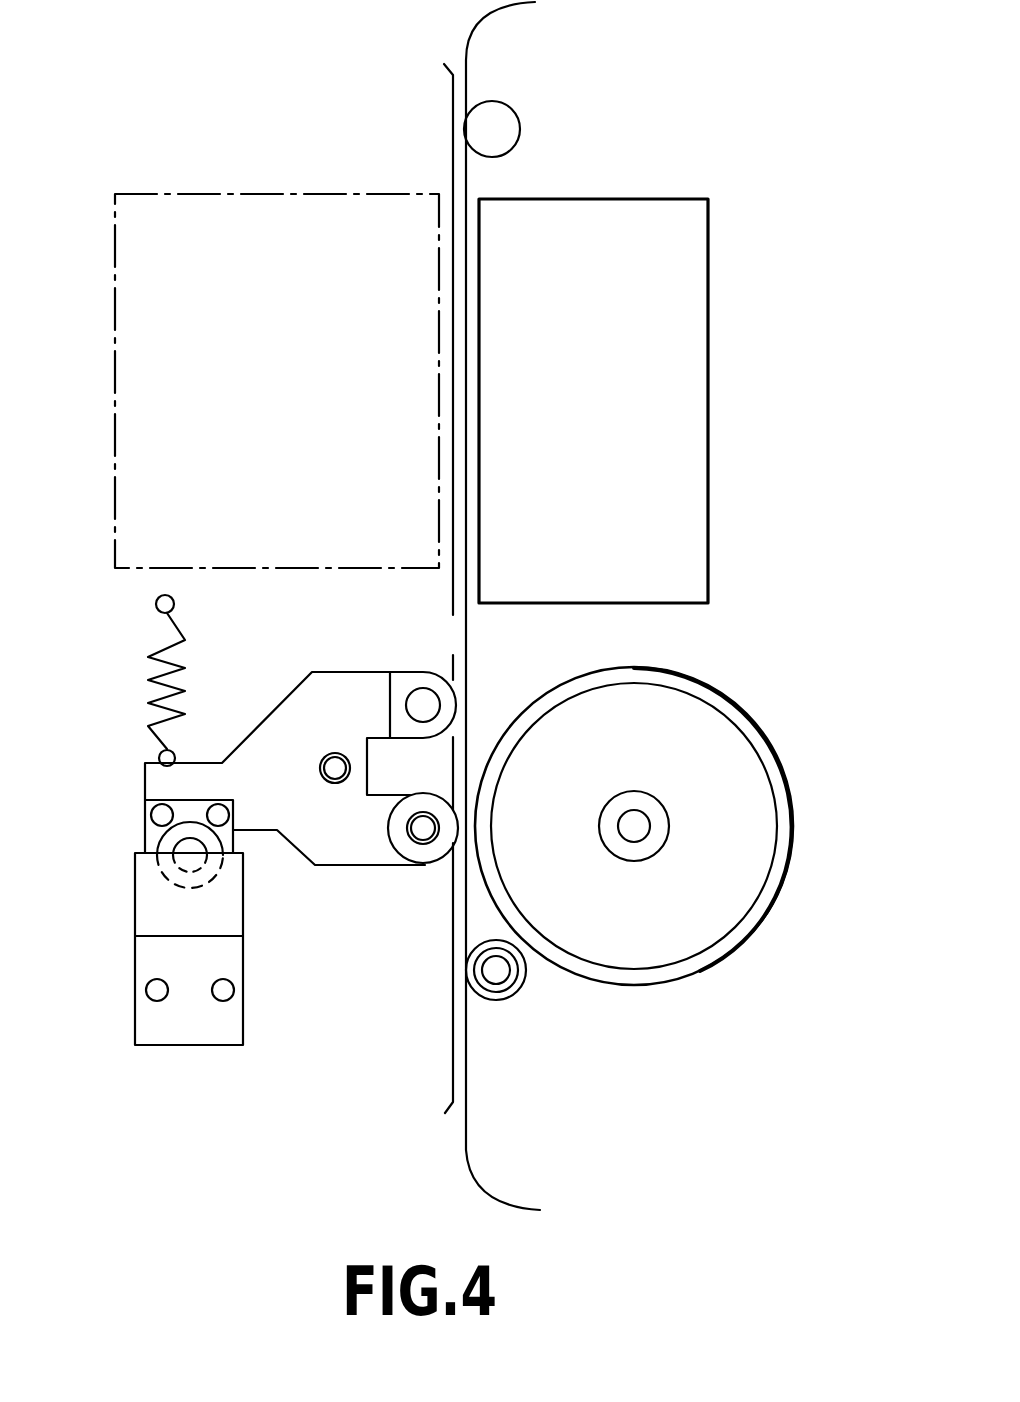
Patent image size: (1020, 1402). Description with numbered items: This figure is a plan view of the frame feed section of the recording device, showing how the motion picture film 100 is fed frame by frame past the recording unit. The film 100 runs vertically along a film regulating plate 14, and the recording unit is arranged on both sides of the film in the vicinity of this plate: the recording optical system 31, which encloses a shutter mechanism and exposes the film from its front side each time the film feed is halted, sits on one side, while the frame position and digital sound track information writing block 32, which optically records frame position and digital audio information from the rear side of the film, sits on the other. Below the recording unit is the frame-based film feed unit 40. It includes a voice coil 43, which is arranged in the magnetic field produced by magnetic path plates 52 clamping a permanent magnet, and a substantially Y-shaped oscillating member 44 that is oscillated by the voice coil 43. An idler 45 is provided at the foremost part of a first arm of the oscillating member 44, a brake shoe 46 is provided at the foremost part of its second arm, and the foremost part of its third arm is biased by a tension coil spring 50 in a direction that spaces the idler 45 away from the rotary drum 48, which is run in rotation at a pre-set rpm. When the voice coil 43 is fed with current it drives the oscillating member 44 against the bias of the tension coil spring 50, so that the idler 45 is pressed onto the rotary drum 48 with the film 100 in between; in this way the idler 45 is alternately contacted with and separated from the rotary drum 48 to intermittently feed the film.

The motion picture film 100 is at (470, 60).
The film regulating plate 14 is at (452, 157).
The recording optical system 31 is at (258, 235).
The frame position and digital sound track information writing block 32 is at (672, 402).
The frame-based film feed unit 40 is at (766, 710).
The rotary drum 48 is at (658, 930).
The oscillating member 44 is at (330, 850).
The brake shoe 46 is at (437, 703).
The idler 45 is at (418, 855).
The tension coil spring 50 is at (163, 695).
The voice coil 43 is at (168, 838).
The magnetic path plates 52 is at (168, 905).